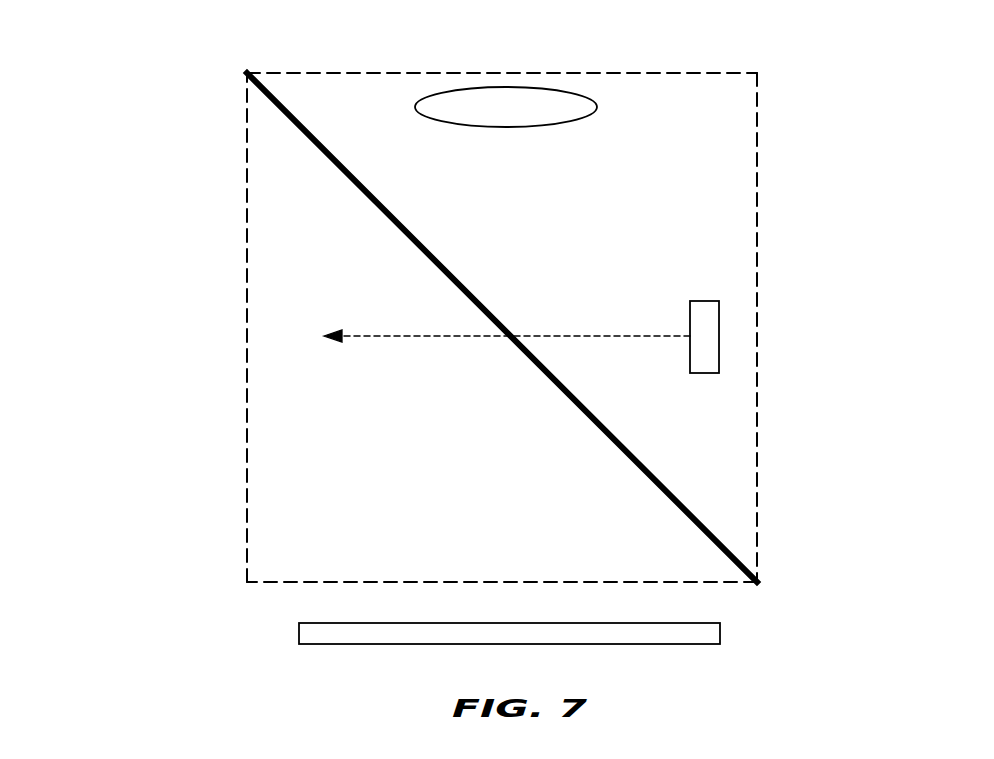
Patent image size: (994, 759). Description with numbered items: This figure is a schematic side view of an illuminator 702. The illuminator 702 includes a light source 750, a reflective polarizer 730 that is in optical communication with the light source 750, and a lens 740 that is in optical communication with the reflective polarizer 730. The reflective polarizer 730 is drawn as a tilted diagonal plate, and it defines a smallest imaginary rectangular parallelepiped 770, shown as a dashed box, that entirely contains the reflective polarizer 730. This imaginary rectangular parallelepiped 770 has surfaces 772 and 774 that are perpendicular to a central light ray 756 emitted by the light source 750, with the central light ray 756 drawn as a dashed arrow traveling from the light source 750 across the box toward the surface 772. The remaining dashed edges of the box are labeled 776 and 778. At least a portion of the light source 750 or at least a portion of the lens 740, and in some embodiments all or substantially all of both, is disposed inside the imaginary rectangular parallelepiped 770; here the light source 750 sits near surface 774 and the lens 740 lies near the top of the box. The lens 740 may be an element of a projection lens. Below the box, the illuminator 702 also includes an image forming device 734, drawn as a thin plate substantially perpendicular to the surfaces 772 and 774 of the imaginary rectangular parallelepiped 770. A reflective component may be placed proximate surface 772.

The illuminator 702 is at (440, 331).
The reflective polarizer 730 is at (692, 510).
The image forming device 734 is at (705, 632).
The lens 740 is at (527, 110).
The light source 750 is at (705, 328).
The central light ray 756 is at (590, 335).
The imaginary rectangular parallelepiped 770 is at (491, 331).
The surface of imaginary rectangular parallelepiped 772 is at (247, 230).
The surface of imaginary rectangular parallelepiped 774 is at (757, 200).
The top wall of housing 776 is at (688, 73).
The bottom wall of housing 778 is at (290, 582).